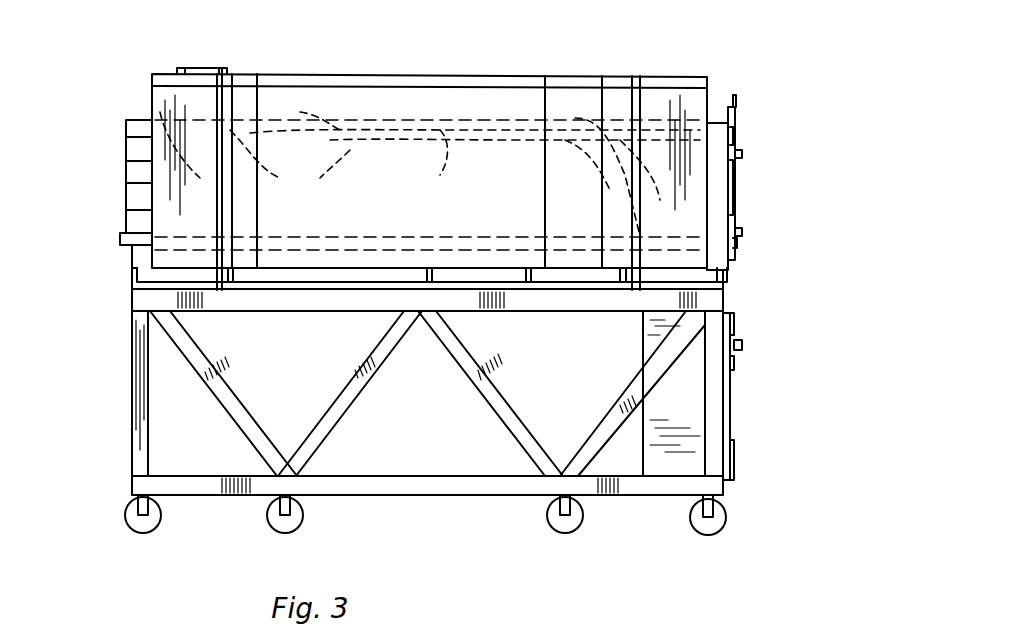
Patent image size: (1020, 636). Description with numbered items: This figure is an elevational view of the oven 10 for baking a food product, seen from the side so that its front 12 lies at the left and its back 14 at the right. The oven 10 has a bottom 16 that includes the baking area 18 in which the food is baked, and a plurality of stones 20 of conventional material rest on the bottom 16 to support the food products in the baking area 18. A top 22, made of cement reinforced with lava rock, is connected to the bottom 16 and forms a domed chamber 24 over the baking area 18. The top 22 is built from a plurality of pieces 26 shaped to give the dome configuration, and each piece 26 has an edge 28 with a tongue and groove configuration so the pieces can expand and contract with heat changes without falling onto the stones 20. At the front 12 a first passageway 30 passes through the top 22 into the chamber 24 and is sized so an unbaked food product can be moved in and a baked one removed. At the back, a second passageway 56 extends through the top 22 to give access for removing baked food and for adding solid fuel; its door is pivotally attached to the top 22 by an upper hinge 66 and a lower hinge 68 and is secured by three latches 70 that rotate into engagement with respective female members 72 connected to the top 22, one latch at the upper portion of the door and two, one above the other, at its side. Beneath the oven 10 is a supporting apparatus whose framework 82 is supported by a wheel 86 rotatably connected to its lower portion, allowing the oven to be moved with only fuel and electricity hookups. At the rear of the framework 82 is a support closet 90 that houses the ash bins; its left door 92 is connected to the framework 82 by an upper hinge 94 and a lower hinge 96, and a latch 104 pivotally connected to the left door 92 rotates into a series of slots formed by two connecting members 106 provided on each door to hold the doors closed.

The oven 10 is at (722, 66).
The front 12 is at (124, 121).
The back 14 is at (736, 100).
The bottom 16 is at (135, 266).
The baking area 18 is at (330, 237).
The stones 20 is at (262, 235).
The top 22 is at (152, 92).
The domed chamber 24 is at (515, 182).
The pieces 26 is at (258, 145).
The edge 28 is at (340, 126).
The first passageway 30 is at (126, 183).
The second passageway 56 is at (715, 112).
The upper hinge 66 is at (745, 154).
The lower hinge 68 is at (745, 229).
The latches 70 is at (740, 102).
The female member 72 is at (745, 128).
The framework 82 is at (220, 380).
The wheel 86 is at (150, 528).
The support closet 90 is at (642, 350).
The left door 92 is at (732, 400).
The upper hinge 94 is at (735, 330).
The lower hinge 96 is at (733, 450).
The latch 104 is at (743, 346).
The connecting members 106 is at (736, 366).